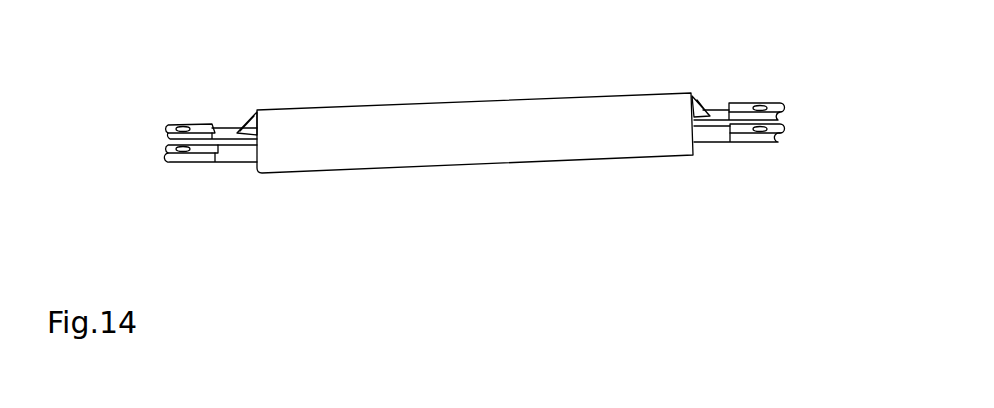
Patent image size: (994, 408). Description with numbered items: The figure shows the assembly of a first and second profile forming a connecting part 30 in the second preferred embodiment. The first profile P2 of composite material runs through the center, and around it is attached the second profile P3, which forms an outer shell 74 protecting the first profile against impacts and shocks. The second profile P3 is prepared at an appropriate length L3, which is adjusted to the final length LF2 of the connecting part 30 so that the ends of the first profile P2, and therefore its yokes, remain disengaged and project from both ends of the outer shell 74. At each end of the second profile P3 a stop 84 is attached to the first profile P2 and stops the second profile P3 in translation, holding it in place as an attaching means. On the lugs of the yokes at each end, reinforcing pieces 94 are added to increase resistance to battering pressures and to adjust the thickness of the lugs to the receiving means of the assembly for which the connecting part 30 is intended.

The connecting part 30 is at (452, 192).
The outer shell 74 is at (386, 131).
The stop 84 is at (250, 117).
The reinforcing pieces 94 is at (158, 127).
The first profile P2 is at (713, 147).
The second profile P3 is at (640, 127).
The final length LF2 is at (160, 32).
The length of second profile L3 is at (255, 75).